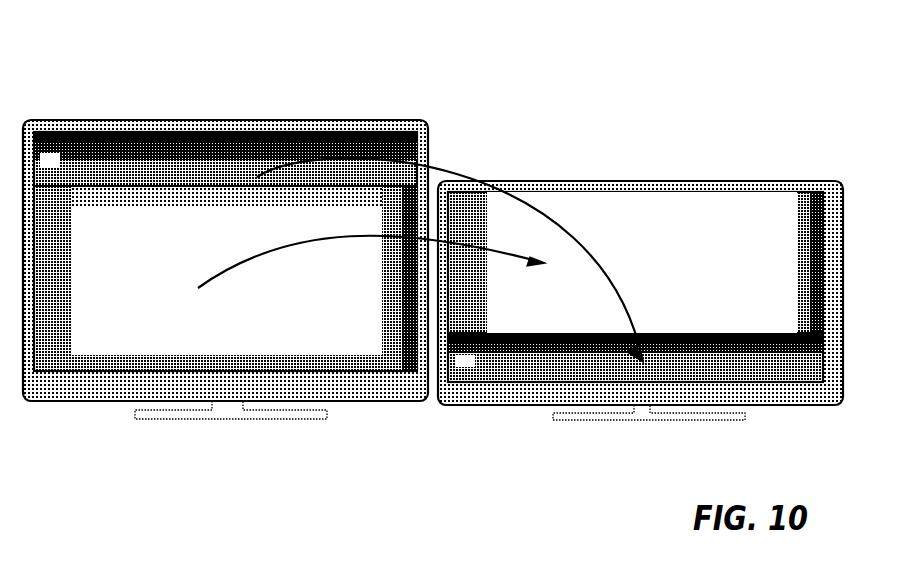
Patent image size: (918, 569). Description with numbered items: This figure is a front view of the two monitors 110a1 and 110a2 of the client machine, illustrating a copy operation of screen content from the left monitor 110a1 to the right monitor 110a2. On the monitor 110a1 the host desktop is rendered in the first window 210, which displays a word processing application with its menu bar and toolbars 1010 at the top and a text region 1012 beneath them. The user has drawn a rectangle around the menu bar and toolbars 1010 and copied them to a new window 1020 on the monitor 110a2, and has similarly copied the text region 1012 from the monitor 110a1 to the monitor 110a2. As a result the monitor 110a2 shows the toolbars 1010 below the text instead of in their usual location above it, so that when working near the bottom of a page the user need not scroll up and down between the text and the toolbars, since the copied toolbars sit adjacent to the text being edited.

The monitor 110a1 is at (114, 121).
The monitor 110a2 is at (618, 183).
The first window 210 is at (200, 144).
The toolbar 1010 is at (260, 138).
The text region 1012 is at (370, 302).
The new window 1020 is at (542, 333).